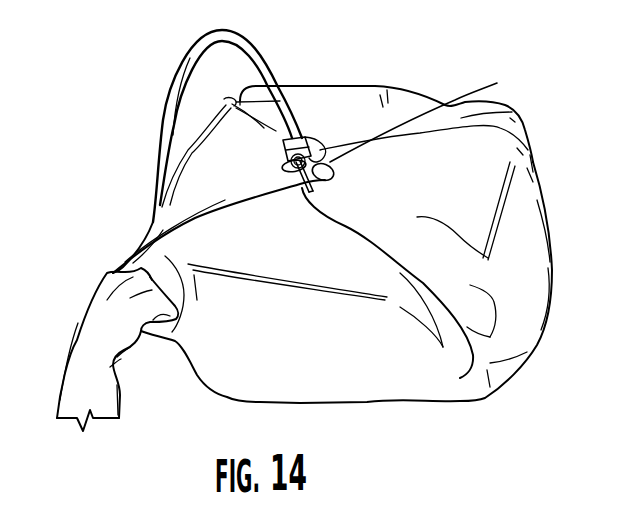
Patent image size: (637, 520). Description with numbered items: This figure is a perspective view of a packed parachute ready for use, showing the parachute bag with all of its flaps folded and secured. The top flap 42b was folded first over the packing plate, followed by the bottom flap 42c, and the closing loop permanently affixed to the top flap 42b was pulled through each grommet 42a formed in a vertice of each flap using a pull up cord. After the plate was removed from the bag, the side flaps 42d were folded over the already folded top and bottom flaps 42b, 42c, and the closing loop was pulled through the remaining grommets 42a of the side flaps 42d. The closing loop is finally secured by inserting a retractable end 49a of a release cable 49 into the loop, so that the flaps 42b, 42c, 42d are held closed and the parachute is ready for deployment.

The release cable 49 is at (225, 101).
The retractable end 49a is at (335, 172).
The grommet 42a is at (285, 168).
The top flap 42b is at (347, 118).
The bottom flap 42c is at (316, 251).
The side flaps 42d is at (183, 198).